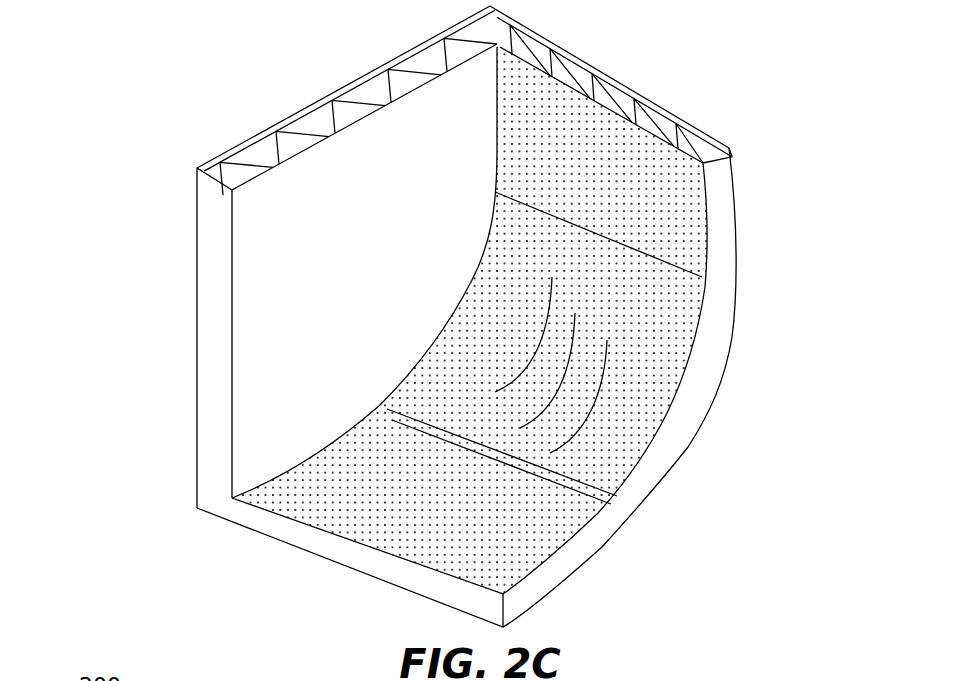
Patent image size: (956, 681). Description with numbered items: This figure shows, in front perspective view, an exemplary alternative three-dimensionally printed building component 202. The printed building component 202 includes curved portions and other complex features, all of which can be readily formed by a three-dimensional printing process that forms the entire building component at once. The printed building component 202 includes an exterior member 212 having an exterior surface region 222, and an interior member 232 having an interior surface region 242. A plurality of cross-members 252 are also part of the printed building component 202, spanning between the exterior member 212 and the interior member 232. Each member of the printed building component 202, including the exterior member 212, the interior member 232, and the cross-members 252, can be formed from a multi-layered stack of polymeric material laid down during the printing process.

The printed building component 202 is at (153, 63).
The exterior member 212 is at (210, 271).
The exterior surface region 222 is at (365, 67).
The interior member 232 is at (720, 290).
The interior surface region 242 is at (678, 413).
The cross-members 252 is at (613, 92).